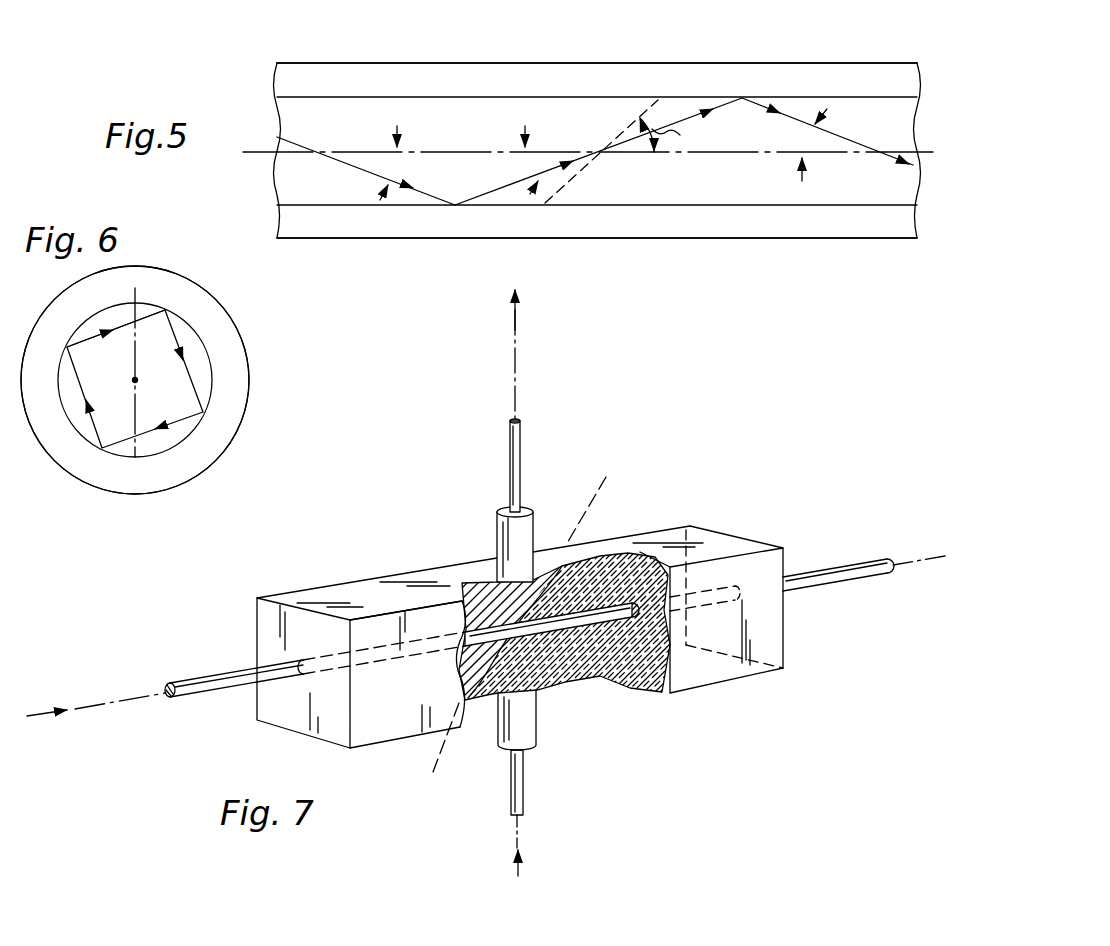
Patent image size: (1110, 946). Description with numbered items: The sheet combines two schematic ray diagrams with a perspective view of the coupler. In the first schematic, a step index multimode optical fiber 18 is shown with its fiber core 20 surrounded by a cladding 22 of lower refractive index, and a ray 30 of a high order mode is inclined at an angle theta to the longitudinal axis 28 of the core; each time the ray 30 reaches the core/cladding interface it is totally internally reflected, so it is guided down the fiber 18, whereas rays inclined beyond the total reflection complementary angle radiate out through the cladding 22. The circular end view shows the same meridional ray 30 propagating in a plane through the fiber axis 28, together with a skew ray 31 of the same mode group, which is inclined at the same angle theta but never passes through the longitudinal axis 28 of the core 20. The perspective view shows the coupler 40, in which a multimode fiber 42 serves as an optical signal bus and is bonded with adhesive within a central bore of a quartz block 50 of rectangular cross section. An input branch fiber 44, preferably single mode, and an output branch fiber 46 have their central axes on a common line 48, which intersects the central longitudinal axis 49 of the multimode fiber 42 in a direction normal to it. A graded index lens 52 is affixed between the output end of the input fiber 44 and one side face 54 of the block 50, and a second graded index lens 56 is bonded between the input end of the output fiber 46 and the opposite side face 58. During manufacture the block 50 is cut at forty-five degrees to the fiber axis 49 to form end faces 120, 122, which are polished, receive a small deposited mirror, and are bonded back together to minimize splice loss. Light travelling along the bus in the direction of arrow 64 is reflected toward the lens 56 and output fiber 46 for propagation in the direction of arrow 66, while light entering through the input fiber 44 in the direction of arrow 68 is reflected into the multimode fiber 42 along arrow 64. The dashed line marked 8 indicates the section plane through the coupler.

In FIG. 5, the optical fiber 18 is at (712, 55).
In FIG. 6, the optical fiber 18 is at (248, 325).
In FIG. 5, the fiber core 20 is at (537, 100).
In FIG. 6, the fiber core 20 is at (157, 444).
In FIG. 5, the cladding 22 is at (443, 72).
In FIG. 6, the cladding 22 is at (235, 375).
In FIG. 5, the longitudinal axis 28 is at (437, 149).
In FIG. 6, the longitudinal axis 28 is at (137, 383).
In FIG. 5, the ray 30 is at (340, 165).
In FIG. 6, the ray 30 is at (130, 364).
In FIG. 6, the skew ray 31 is at (100, 333).
In FIG. 7, the coupler 40 is at (398, 510).
In FIG. 7, the multimode fiber 42 is at (208, 698).
In FIG. 7, the input branch fiber 44 is at (527, 780).
In FIG. 7, the output branch fiber 46 is at (520, 446).
In FIG. 7, the common line 48 is at (512, 366).
In FIG. 7, the central longitudinal axis 49 is at (107, 697).
In FIG. 7, the quartz block 50 is at (730, 683).
In FIG. 7, the graded index lens 52 is at (528, 718).
In FIG. 7, the side face 54 is at (592, 680).
In FIG. 7, the graded index lens 56 is at (500, 530).
In FIG. 7, the side face 58 is at (460, 579).
In FIG. 7, the arrow 64 is at (30, 718).
In FIG. 7, the arrow 66 is at (512, 325).
In FIG. 7, the arrow 68 is at (525, 872).
In FIG. 7, the end face 120 is at (560, 558).
In FIG. 7, the end face 122 is at (465, 672).
In FIG. 7, the section line 8- 8 is at (583, 467).